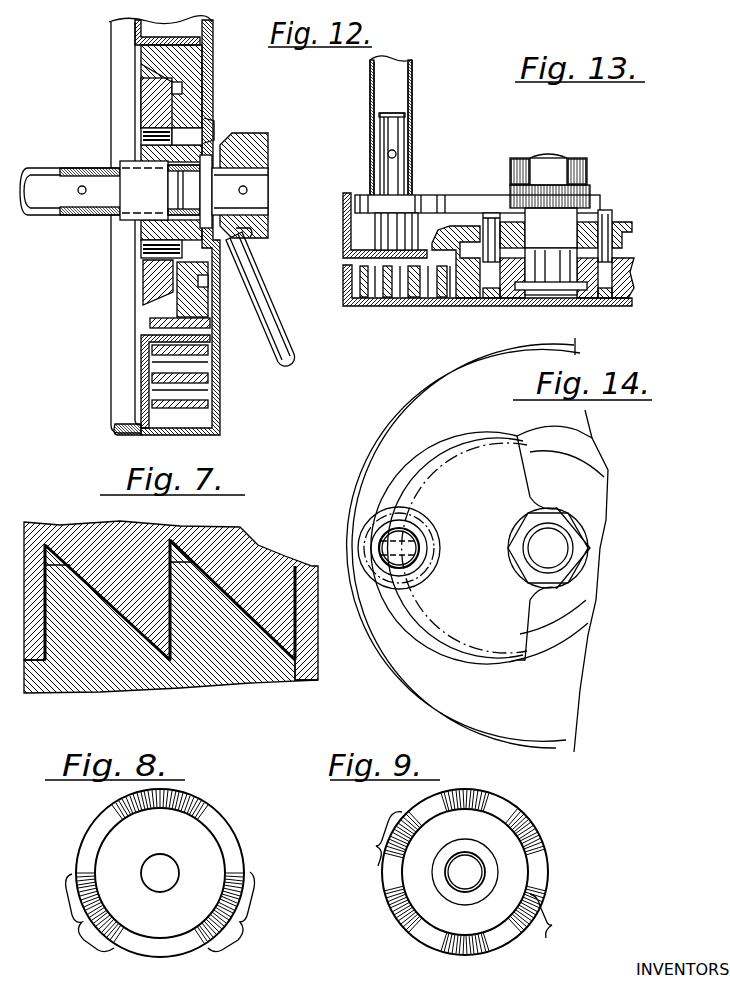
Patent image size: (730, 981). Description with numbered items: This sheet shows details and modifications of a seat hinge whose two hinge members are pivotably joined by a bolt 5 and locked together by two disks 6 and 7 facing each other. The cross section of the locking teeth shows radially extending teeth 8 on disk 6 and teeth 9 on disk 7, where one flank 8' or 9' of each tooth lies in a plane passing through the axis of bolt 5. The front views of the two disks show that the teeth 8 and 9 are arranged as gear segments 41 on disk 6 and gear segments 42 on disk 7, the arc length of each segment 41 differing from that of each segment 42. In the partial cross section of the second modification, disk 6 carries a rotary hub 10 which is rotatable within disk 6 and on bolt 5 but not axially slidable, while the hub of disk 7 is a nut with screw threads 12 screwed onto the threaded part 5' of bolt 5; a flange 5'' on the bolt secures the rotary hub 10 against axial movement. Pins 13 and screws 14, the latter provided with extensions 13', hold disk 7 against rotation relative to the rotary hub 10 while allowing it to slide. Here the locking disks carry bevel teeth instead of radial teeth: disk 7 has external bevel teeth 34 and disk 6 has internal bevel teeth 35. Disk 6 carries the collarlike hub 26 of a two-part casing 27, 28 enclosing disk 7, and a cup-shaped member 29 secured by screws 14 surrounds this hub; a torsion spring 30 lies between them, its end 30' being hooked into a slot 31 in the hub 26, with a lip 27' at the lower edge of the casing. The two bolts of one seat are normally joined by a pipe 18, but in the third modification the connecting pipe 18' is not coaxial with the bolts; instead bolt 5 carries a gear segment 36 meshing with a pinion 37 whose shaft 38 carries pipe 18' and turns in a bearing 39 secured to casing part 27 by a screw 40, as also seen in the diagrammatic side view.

In FIG. 12, the bolt 5 is at (155, 195).
In FIG. 13, the bolt 5 is at (548, 150).
In FIG. 12, the threaded part of bolt 5' is at (133, 211).
In FIG. 13, the threaded part of bolt 5' is at (572, 166).
In FIG. 12, the flange on bolt 5'' is at (249, 171).
In FIG. 13, the flange on bolt 5'' is at (551, 291).
In FIG. 12, the disk 6 is at (193, 87).
In FIG. 8, the disk 6 is at (222, 836).
In FIG. 12, the disk 7 is at (156, 100).
In FIG. 13, the disk 7 is at (626, 224).
In FIG. 9, the disk 7 is at (540, 872).
In FIG. 7, the teeth 8 is at (171, 584).
In FIG. 8, the teeth 8 is at (169, 791).
In FIG. 7, the tooth flank 8' is at (177, 582).
In FIG. 7, the teeth 9 is at (171, 640).
In FIG. 9, the teeth 9 is at (512, 872).
In FIG. 7, the tooth flank 9' is at (257, 612).
In FIG. 12, the rotary hub 10 is at (145, 250).
In FIG. 13, the rotary hub 10 is at (630, 275).
In FIG. 12, the screw threads 12 is at (140, 170).
In FIG. 13, the screw threads 12 is at (530, 238).
In FIG. 13, the pins 13 is at (629, 236).
In FIG. 12, the extensions 13' is at (121, 125).
In FIG. 13, the extensions 13' is at (493, 202).
In FIG. 12, the screws 14 is at (210, 128).
In FIG. 13, the screws 14 is at (490, 285).
In FIG. 12, the pipe 18 is at (70, 173).
In FIG. 13, the connecting pipe 18' is at (420, 127).
In FIG. 14, the connecting pipe 18' is at (414, 496).
In FIG. 12, the collarlike hub 26 is at (213, 40).
In FIG. 13, the casing part 27 is at (365, 225).
In FIG. 14, the casing part 27 is at (463, 543).
In FIG. 12, the cover lip 27' is at (101, 228).
In FIG. 14, the casing part 28 is at (558, 697).
In FIG. 13, the cup-shaped member 29 is at (445, 295).
In FIG. 12, the torsion spring 30 is at (212, 381).
In FIG. 13, the torsion spring 30 is at (487, 299).
In FIG. 12, the spring end 30' is at (136, 329).
In FIG. 12, the slot 31 is at (222, 318).
In FIG. 12, the external bevel teeth 34 is at (160, 290).
In FIG. 12, the internal bevel teeth 35 is at (160, 72).
In FIG. 13, the gear segment 36 is at (450, 200).
In FIG. 14, the gear segment 36 is at (520, 485).
In FIG. 13, the pinion 37 is at (378, 210).
In FIG. 14, the pinion 37 is at (368, 522).
In FIG. 13, the shaft 38 is at (403, 135).
In FIG. 14, the shaft 38 is at (393, 552).
In FIG. 13, the bearing 39 is at (375, 230).
In FIG. 13, the screw 40 is at (402, 295).
In FIG. 8, the gear segments 41 is at (155, 912).
In FIG. 9, the gear segments 42 is at (461, 873).